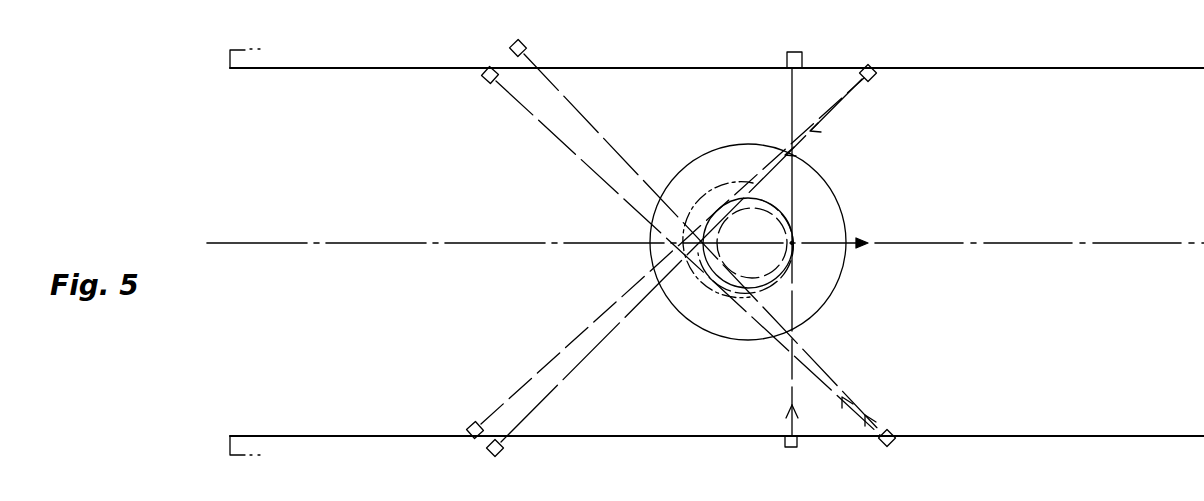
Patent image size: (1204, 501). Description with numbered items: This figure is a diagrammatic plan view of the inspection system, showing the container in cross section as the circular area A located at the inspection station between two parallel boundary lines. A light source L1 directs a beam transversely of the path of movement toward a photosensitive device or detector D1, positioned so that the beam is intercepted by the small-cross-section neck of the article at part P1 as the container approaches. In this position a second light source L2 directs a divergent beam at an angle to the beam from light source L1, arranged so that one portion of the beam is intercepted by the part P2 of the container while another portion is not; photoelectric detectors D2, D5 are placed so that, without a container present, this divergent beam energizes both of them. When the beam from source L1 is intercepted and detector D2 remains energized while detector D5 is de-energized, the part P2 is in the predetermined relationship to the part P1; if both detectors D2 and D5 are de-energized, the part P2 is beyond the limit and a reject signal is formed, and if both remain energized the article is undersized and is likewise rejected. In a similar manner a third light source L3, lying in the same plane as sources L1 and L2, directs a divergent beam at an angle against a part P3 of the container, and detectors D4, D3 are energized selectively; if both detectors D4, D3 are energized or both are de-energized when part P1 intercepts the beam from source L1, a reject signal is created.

The circular area / tube cross-section A is at (683, 170).
The part of the article P1 is at (794, 243).
The part of the container P2 is at (720, 200).
The part of the container P3 is at (712, 278).
The light source L1 is at (798, 440).
The second light source L2 is at (874, 78).
The third light source L3 is at (892, 434).
The photosensitive device or detector D1 is at (803, 55).
The photoelectric detector D2 is at (468, 430).
The detector D3 is at (498, 454).
The detector D4 is at (527, 49).
The photoelectric detector D5 is at (489, 83).